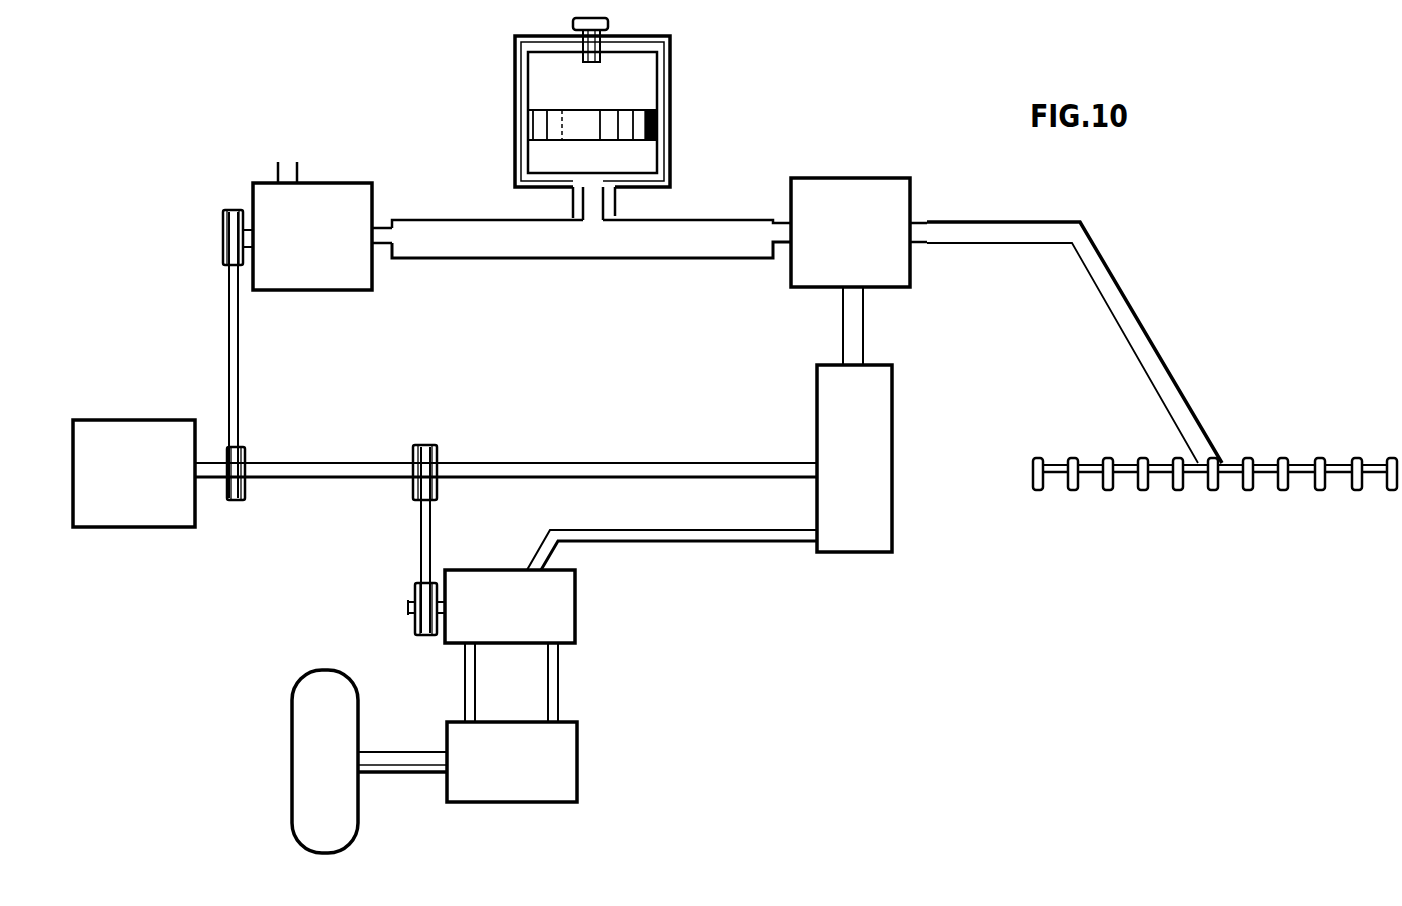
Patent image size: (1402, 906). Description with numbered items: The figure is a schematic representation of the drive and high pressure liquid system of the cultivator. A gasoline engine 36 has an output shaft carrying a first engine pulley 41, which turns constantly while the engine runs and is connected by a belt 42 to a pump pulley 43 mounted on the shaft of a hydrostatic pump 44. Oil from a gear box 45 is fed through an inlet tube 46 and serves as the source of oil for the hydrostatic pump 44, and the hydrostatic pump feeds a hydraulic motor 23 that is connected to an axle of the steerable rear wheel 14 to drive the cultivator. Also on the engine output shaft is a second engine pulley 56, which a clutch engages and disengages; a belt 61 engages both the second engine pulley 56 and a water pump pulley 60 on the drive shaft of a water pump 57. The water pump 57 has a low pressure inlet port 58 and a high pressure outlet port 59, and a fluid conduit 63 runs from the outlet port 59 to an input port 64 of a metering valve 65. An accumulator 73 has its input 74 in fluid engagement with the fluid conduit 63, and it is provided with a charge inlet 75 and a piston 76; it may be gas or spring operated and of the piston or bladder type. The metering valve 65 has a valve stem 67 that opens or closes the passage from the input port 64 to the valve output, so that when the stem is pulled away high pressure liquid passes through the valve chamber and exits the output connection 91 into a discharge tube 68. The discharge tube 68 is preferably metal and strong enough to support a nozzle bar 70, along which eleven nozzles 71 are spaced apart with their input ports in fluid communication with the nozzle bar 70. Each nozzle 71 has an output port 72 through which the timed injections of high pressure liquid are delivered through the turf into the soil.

The steerable rear wheel 14 is at (308, 676).
The hydraulic motor 23 is at (494, 777).
The gasoline engine 36 is at (120, 487).
The first engine pulley 41 is at (437, 456).
The belt 42 is at (432, 546).
The pump pulley 43 is at (413, 595).
The hydrostatic pump 44 is at (494, 622).
The gear box 45 is at (862, 552).
The inlet tube 46 is at (663, 544).
The second engine pulley 56 is at (246, 460).
The water pump 57 is at (298, 250).
The low pressure inlet port 58 is at (288, 167).
The high pressure outlet port 59 is at (376, 224).
The water pump pulley 60 is at (223, 228).
The belt 61 is at (229, 346).
The fluid conduit 63 is at (506, 253).
The input port 64 is at (792, 216).
The metering valve 65 is at (835, 250).
The valve stem 67 is at (843, 327).
The discharge tube 68 is at (1133, 313).
The nozzle bar 70 is at (1337, 463).
The nozzles 71 is at (1070, 465).
The output port 72 is at (1108, 490).
The accumulator 73 is at (666, 150).
The input 74 is at (603, 210).
The charge inlet 75 is at (604, 42).
The piston 76 is at (650, 115).
The output connection 91 is at (912, 243).